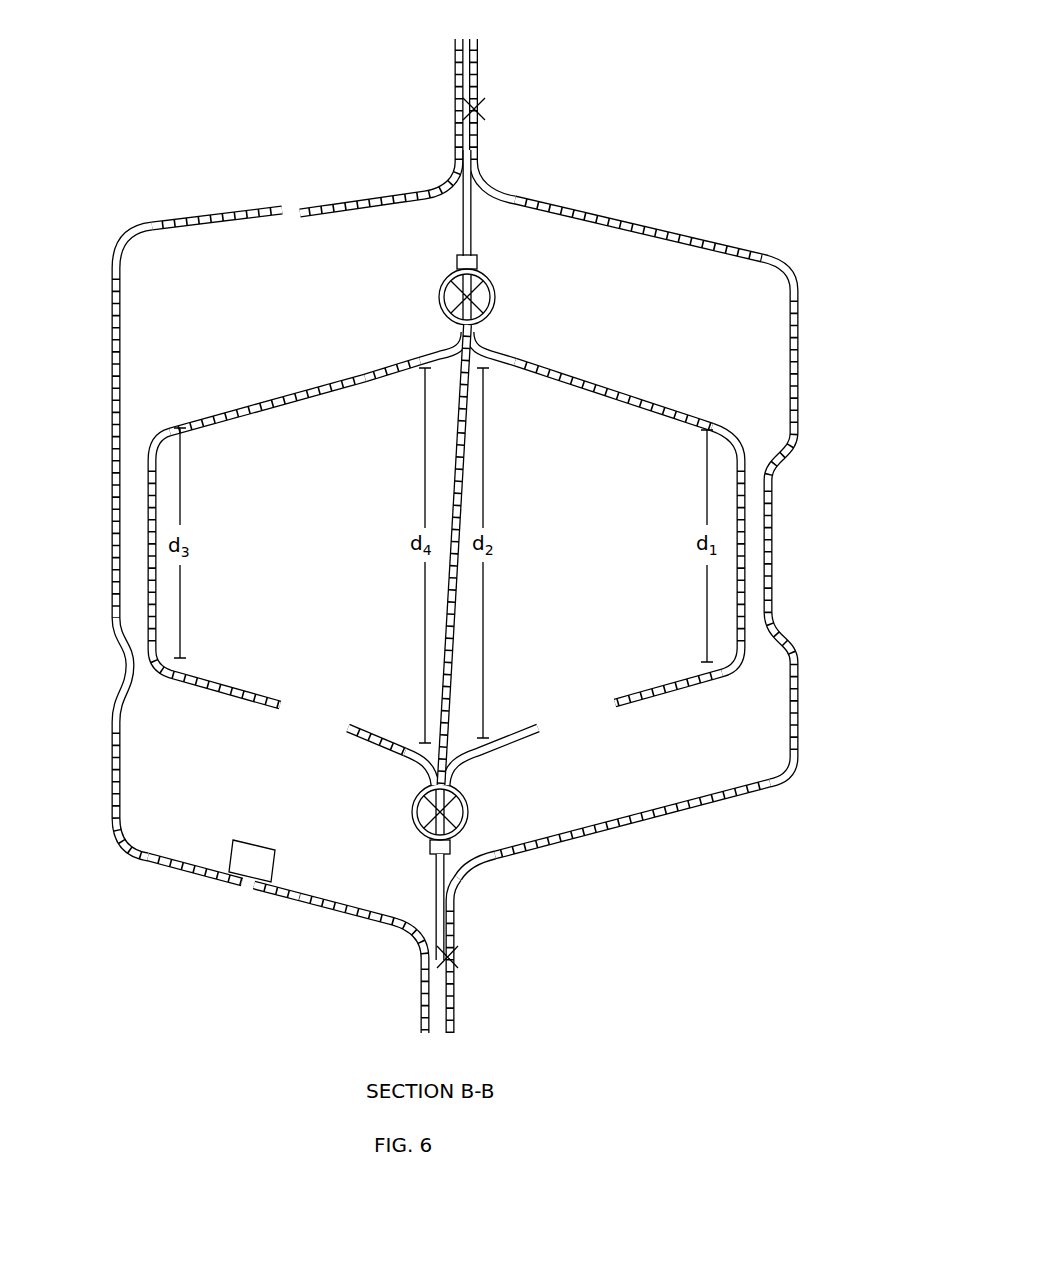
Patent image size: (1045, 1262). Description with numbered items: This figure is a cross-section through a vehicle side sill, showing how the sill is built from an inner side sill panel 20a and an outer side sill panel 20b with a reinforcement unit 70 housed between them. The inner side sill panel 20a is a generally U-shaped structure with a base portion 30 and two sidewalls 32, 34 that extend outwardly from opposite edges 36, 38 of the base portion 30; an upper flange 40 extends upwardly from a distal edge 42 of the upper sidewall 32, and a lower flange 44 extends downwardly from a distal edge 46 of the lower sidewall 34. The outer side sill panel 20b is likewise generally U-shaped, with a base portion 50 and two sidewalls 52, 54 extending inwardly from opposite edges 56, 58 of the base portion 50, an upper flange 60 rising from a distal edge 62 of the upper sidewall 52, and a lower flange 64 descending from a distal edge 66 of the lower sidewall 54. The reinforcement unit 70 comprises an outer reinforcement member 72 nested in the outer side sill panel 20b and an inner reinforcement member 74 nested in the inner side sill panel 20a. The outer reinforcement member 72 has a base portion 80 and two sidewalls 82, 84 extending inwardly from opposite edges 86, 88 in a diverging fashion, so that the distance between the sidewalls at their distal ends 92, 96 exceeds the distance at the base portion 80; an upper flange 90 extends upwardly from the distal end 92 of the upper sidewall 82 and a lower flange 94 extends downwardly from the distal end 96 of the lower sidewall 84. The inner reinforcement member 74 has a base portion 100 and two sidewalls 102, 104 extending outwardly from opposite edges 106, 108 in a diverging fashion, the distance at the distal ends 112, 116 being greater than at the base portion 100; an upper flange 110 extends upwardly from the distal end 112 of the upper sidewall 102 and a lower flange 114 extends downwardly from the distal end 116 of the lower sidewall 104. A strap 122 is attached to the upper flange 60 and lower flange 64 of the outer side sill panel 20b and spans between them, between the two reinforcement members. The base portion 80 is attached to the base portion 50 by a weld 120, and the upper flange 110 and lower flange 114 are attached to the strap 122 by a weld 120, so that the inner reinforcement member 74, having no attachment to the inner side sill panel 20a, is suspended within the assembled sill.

The inner side sill panel 20a is at (212, 150).
The outer side sill panel 20b is at (842, 472).
The base portion 30 is at (112, 540).
The upper sidewall 32 is at (165, 220).
The lower sidewall 34 is at (190, 872).
The edge 36 is at (117, 250).
The edge 38 is at (125, 852).
The upper flange 40 is at (454, 86).
The distal edge 42 is at (440, 184).
The lower flange 44 is at (420, 982).
The distal edge 46 is at (408, 930).
The base portion 50 is at (772, 533).
The upper sidewall 52 is at (600, 212).
The lower sidewall 54 is at (708, 812).
The edge 56 is at (800, 272).
The edge 58 is at (782, 797).
The upper flange 60 is at (482, 62).
The distal edge 62 is at (492, 178).
The lower flange 64 is at (458, 990).
The distal edge 66 is at (455, 888).
The reinforcement unit 70 is at (236, 392).
The outer reinforcement member 72 is at (722, 412).
The inner reinforcement member 74 is at (205, 697).
The base portion 80 is at (745, 576).
The upper sidewall 82 is at (700, 412).
The lower sidewall 84 is at (682, 692).
The edge 86 is at (790, 445).
The edge 88 is at (740, 660).
The upper flange 90 is at (480, 262).
The distal end 92 is at (484, 340).
The lower flange 94 is at (472, 866).
The distal end 96 is at (465, 770).
The base portion 100 is at (150, 578).
The upper sidewall 102 is at (365, 366).
The lower sidewall 104 is at (360, 738).
The edge 106 is at (150, 430).
The edge 108 is at (130, 664).
The upper flange 110 is at (456, 262).
The distal end 112 is at (452, 338).
The lower flange 114 is at (430, 848).
The distal end 116 is at (428, 770).
The weld 120 is at (496, 297).
The strap 122 is at (440, 655).